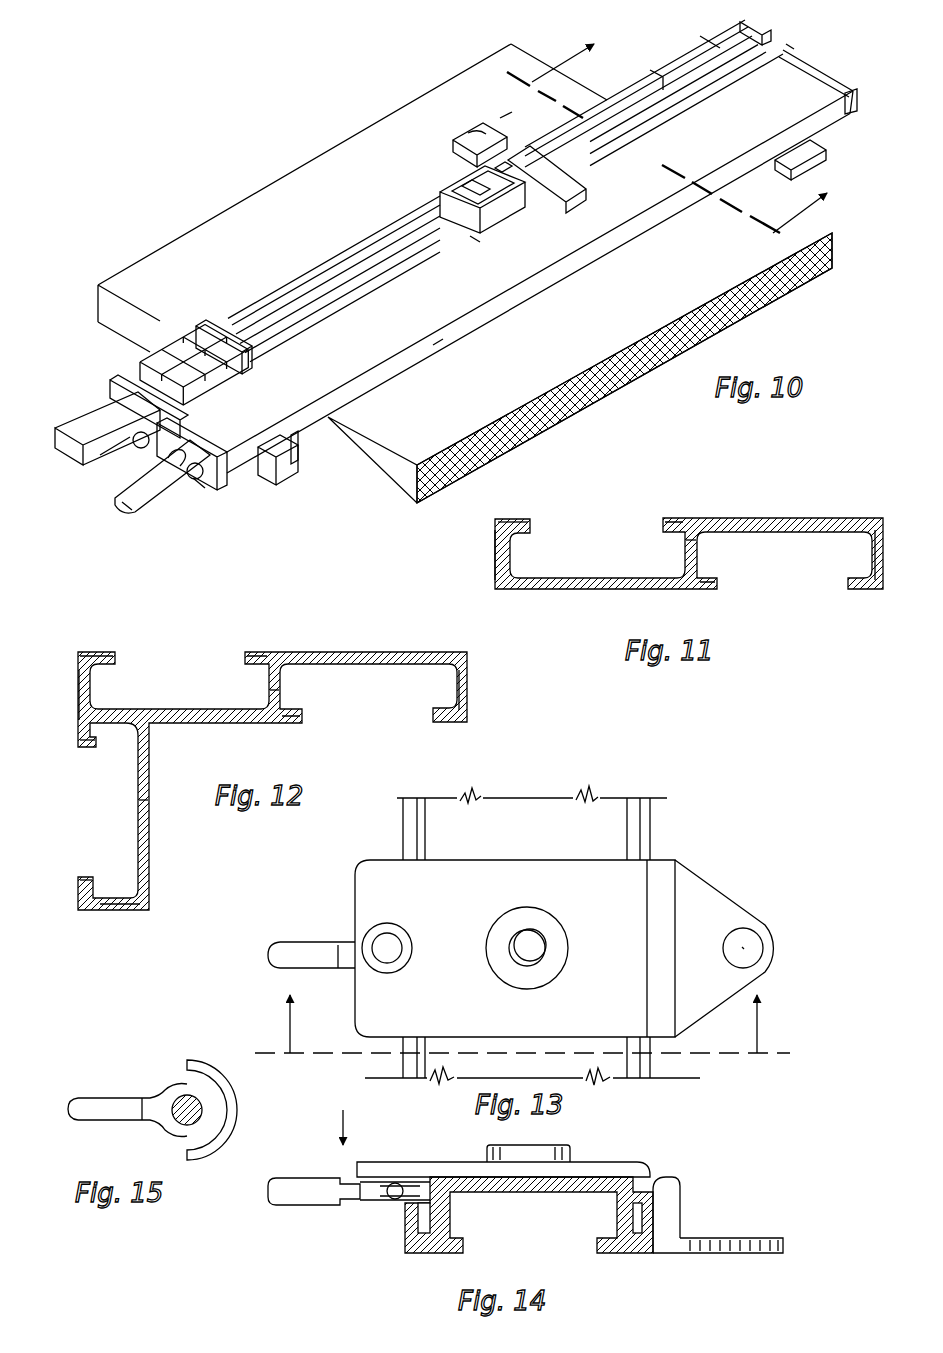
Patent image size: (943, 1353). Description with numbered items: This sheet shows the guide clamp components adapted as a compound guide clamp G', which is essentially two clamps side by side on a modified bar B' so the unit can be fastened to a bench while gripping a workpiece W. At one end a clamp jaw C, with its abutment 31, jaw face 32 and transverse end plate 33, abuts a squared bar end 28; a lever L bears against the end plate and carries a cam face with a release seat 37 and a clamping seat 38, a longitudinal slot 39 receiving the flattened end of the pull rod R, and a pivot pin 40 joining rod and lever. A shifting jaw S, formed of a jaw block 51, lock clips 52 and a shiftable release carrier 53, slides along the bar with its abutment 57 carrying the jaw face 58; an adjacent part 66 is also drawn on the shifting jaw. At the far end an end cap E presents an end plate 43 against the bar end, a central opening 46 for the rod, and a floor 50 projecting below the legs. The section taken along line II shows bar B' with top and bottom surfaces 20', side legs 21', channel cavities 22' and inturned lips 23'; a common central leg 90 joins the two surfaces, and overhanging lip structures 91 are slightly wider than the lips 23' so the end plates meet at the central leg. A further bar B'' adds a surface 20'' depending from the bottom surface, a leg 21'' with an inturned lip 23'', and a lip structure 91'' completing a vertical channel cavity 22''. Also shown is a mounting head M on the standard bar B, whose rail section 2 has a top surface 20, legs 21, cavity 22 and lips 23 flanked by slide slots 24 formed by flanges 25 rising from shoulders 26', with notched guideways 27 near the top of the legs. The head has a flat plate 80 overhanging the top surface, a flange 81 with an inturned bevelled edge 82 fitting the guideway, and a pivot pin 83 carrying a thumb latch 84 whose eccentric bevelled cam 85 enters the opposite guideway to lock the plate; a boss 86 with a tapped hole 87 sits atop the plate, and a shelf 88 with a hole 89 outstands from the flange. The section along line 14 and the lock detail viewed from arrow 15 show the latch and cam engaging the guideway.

In FIG. 10, the top and bottom surfaces 20' is at (475, 258).
In FIG. 11, the top and bottom surfaces 20' is at (689, 554).
In FIG. 12, the top and bottom surfaces 20' is at (272, 766).
In FIG. 10, the side leg 21' is at (457, 355).
In FIG. 11, the side leg 21' is at (688, 555).
In FIG. 12, the side leg 21' is at (275, 695).
In FIG. 11, the channel cavity 22' is at (685, 548).
In FIG. 12, the channel cavity 22' is at (258, 687).
In FIG. 11, the inturned lip 23' is at (680, 555).
In FIG. 12, the inturned lip 23' is at (254, 686).
In FIG. 11, the central leg 90 is at (688, 545).
In FIG. 12, the central leg 90 is at (270, 688).
In FIG. 11, the lip structure 91 is at (687, 569).
In FIG. 12, the lip structure 91 is at (266, 693).
In FIG. 12, the lip structure 91'' is at (61, 752).
In FIG. 12, the surface 20'' is at (176, 831).
In FIG. 12, the leg 21'' is at (135, 918).
In FIG. 12, the vertical channel cavity 22'' is at (115, 818).
In FIG. 12, the inturned lip 23'' is at (67, 869).
In FIG. 13, the top surface 20 is at (532, 935).
In FIG. 13, the slide slot 24 is at (412, 826).
In FIG. 14, the slide slot 24 is at (648, 1224).
In FIG. 13, the flange 25 is at (640, 820).
In FIG. 14, the flange 25 is at (650, 1210).
In FIG. 13, the plate 80 is at (481, 900).
In FIG. 14, the plate 80 is at (596, 1162).
In FIG. 13, the flange 81 is at (663, 890).
In FIG. 14, the flange 81 is at (682, 1180).
In FIG. 14, the inturned bevelled edge 82 is at (664, 1176).
In FIG. 13, the pivot pin 83 is at (392, 954).
In FIG. 14, the pivot pin 83 is at (388, 1202).
In FIG. 15, the pivot pin 83 is at (178, 1122).
In FIG. 13, the thumb latch 84 is at (323, 944).
In FIG. 14, the thumb latch 84 is at (302, 1180).
In FIG. 15, the thumb latch 84 is at (152, 1096).
In FIG. 14, the eccentric bevelled cam 85 is at (370, 1200).
In FIG. 15, the eccentric bevelled cam 85 is at (205, 1062).
In FIG. 13, the boss 86 is at (545, 918).
In FIG. 14, the boss 86 is at (552, 1146).
In FIG. 13, the tapped hole 87 is at (538, 960).
In FIG. 13, the shelf 88 is at (718, 900).
In FIG. 14, the shelf 88 is at (738, 1238).
In FIG. 13, the hole 89 is at (752, 947).
In FIG. 14, the leg 21 is at (529, 1210).
In FIG. 14, the cavity 22 is at (524, 1220).
In FIG. 14, the inturned lip 23 is at (481, 1265).
In FIG. 14, the shoulder 26' is at (659, 1265).
In FIG. 14, the notched guideway 27 is at (626, 1162).
In FIG. 14, the rail section 2 is at (529, 1192).
In FIG. 10, the squared bar end 28 is at (190, 435).
In FIG. 10, the abutment 31 is at (168, 338).
In FIG. 10, the jaw face 32 is at (216, 326).
In FIG. 10, the end plate 33 is at (118, 382).
In FIG. 10, the release seat 37 is at (205, 455).
In FIG. 10, the clamping seat 38 is at (207, 492).
In FIG. 10, the longitudinal slot 39 is at (118, 414).
In FIG. 10, the pivot pin 40 is at (186, 476).
In FIG. 10, the end plate 43 is at (748, 26).
In FIG. 10, the central opening 46 is at (700, 60).
In FIG. 10, the floor 50 is at (738, 46).
In FIG. 10, the jaw block 51 is at (440, 192).
In FIG. 10, the lock clips 52 is at (508, 162).
In FIG. 10, the release carrier 53 is at (532, 140).
In FIG. 10, the abutment 57 is at (466, 182).
In FIG. 10, the jaw face 58 is at (478, 238).
In FIG. 10, the plate 66 is at (582, 192).
In FIG. 13, the bar B is at (623, 786).
In FIG. 14, the bar B is at (398, 1282).
In FIG. 10, the modified bar B' is at (526, 336).
In FIG. 11, the modified bar B' is at (661, 482).
In FIG. 12, the bar B'' is at (229, 612).
In FIG. 10, the clamp jaw C is at (96, 395).
In FIG. 10, the end cap E is at (773, 33).
In FIG. 10, the compound guide clamp G' is at (330, 214).
In FIG. 10, the lever L is at (62, 458).
In FIG. 13, the mounting head M is at (383, 878).
In FIG. 14, the mounting head M is at (384, 1152).
In FIG. 10, the pull rod R is at (412, 248).
In FIG. 10, the shifting jaw S is at (452, 156).
In FIG. 10, the workpiece W is at (420, 478).
In FIG. 10, the section line II is at (674, 128).
In FIG. 13, the section line 14 is at (521, 1024).
In FIG. 14, the viewing arrow 15 is at (326, 1127).